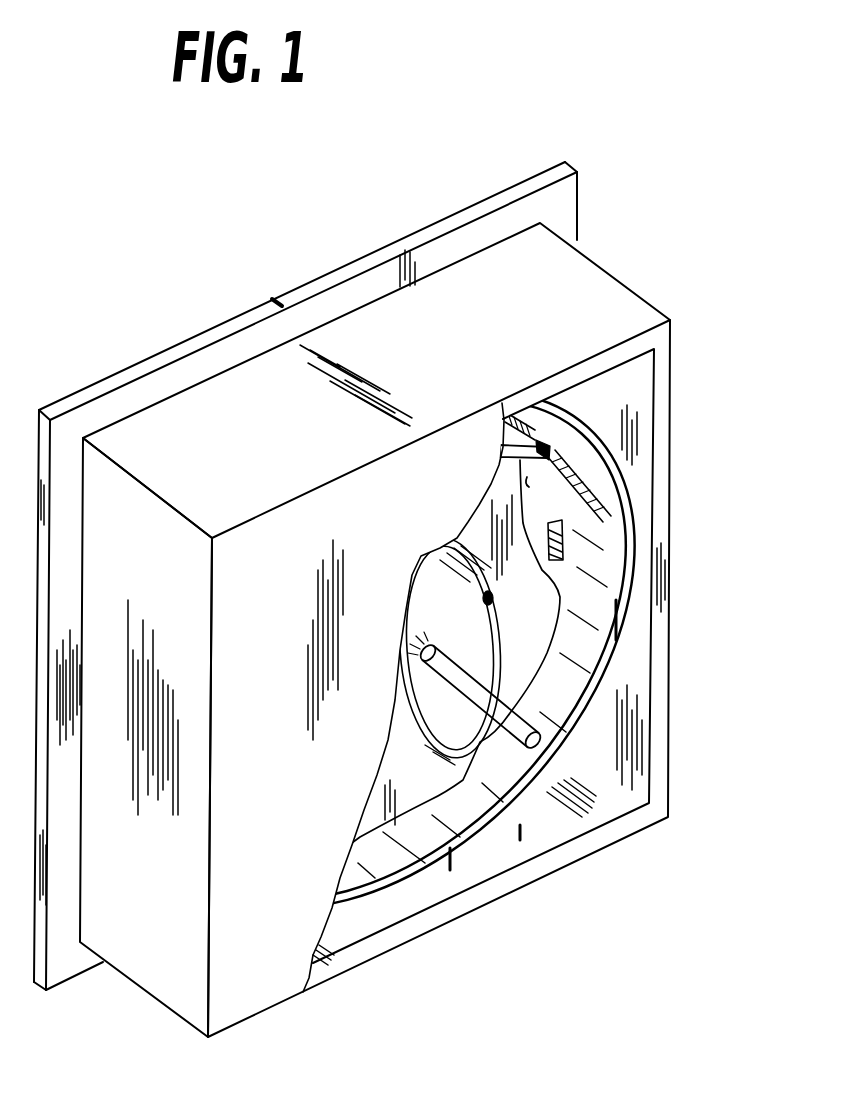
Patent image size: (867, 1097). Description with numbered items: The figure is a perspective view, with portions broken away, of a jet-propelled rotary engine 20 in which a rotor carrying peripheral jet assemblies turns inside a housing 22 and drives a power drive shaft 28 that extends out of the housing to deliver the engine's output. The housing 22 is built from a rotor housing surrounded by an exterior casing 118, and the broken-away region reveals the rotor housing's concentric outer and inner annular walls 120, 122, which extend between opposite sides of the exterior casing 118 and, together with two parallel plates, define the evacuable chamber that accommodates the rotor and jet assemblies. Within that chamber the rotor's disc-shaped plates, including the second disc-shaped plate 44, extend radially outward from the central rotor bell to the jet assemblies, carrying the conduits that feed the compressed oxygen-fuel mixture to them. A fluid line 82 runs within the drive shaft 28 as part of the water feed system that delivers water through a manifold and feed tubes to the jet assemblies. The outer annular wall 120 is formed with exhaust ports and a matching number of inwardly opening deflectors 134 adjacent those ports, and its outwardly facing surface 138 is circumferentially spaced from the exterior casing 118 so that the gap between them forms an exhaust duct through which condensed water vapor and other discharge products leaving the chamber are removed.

The jet-propelled rotary engine 20 is at (698, 165).
The housing 22 is at (612, 302).
The power drive shaft 28 is at (500, 705).
The second disc-shaped plate 44 is at (548, 461).
The fluid line 82 is at (530, 742).
The exterior casing 118 is at (463, 358).
The outer annular wall 120 is at (602, 662).
The inner annular wall 122 is at (460, 542).
The inwardly opening deflector 134 is at (562, 530).
The outwardly facing surface 138 is at (545, 415).